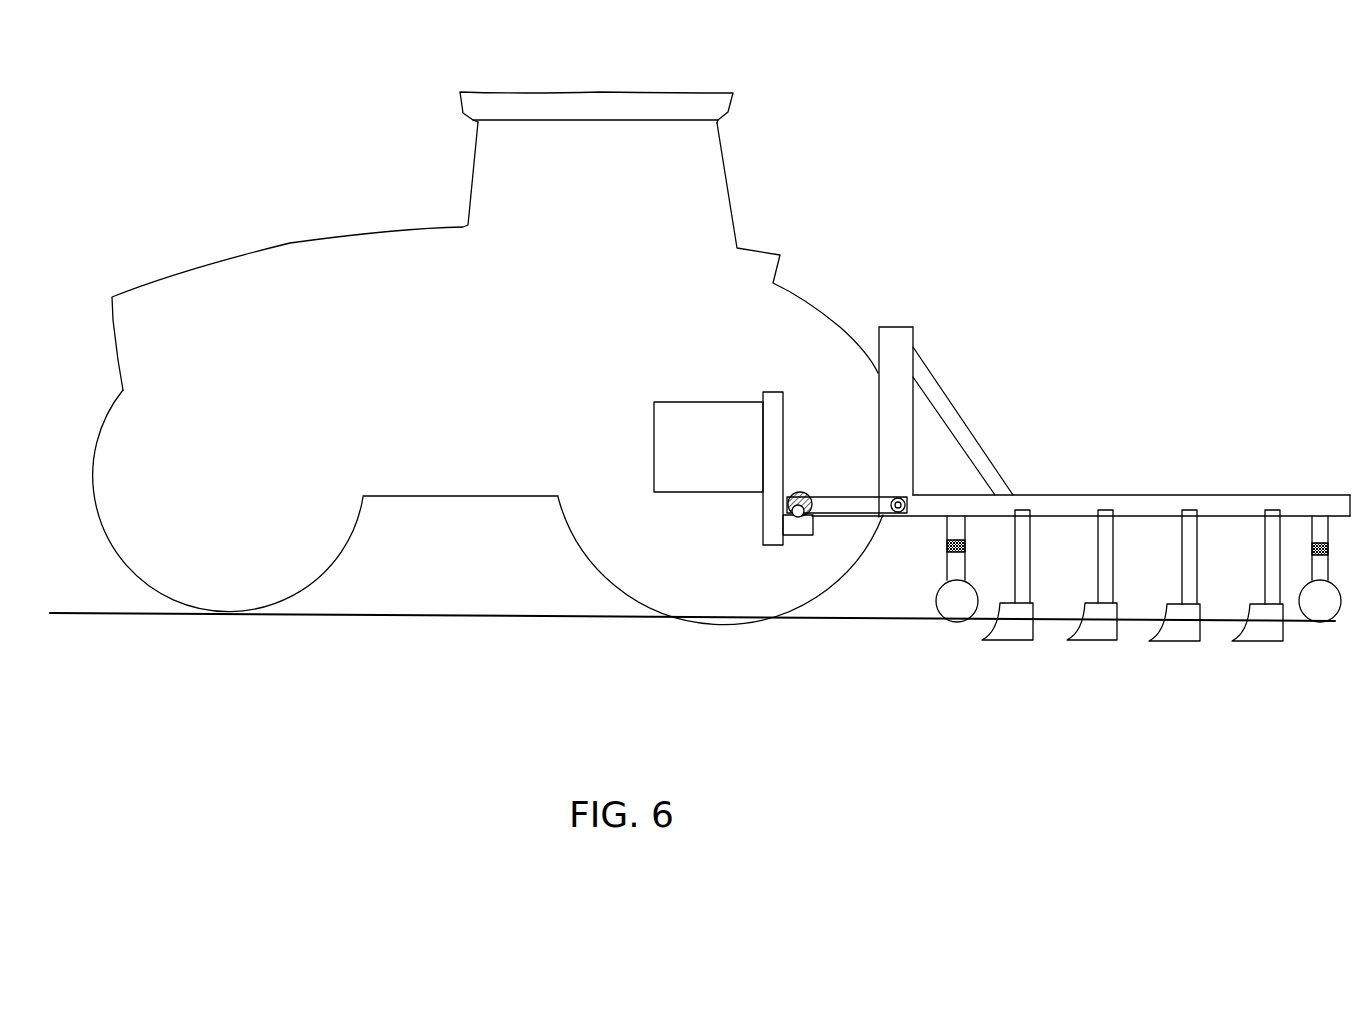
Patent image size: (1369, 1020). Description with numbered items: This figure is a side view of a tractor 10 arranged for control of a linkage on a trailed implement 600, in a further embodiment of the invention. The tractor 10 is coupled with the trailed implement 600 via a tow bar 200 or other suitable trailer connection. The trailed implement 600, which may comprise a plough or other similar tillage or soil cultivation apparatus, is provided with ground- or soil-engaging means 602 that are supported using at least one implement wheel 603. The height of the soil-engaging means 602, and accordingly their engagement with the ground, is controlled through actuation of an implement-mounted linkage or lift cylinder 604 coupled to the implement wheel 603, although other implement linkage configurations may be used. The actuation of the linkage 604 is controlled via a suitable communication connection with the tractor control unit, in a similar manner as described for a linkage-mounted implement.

The tractor 10 is at (277, 157).
The tow bar 200 is at (842, 508).
The trailed implement 600 is at (1092, 507).
The soil-engaging means 602 is at (1107, 632).
The implement wheel 603 is at (957, 608).
The implement-mounted linkage or lift cylinder 604 is at (957, 530).